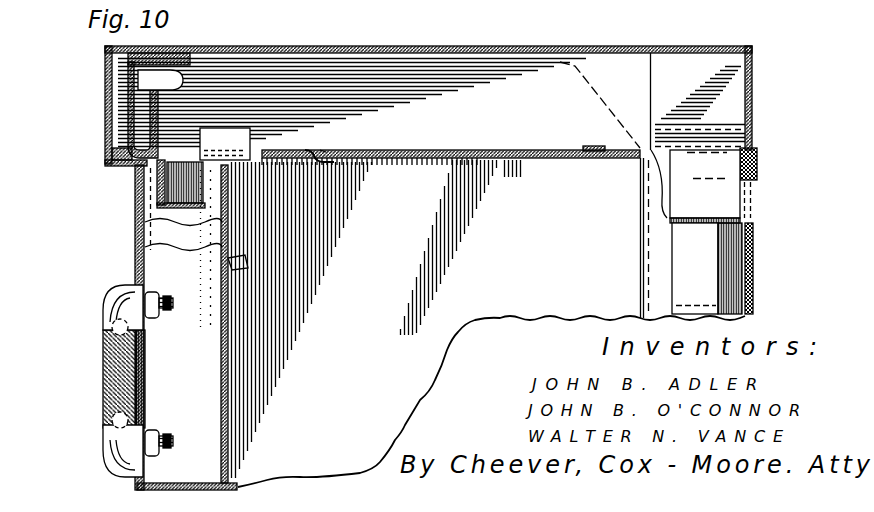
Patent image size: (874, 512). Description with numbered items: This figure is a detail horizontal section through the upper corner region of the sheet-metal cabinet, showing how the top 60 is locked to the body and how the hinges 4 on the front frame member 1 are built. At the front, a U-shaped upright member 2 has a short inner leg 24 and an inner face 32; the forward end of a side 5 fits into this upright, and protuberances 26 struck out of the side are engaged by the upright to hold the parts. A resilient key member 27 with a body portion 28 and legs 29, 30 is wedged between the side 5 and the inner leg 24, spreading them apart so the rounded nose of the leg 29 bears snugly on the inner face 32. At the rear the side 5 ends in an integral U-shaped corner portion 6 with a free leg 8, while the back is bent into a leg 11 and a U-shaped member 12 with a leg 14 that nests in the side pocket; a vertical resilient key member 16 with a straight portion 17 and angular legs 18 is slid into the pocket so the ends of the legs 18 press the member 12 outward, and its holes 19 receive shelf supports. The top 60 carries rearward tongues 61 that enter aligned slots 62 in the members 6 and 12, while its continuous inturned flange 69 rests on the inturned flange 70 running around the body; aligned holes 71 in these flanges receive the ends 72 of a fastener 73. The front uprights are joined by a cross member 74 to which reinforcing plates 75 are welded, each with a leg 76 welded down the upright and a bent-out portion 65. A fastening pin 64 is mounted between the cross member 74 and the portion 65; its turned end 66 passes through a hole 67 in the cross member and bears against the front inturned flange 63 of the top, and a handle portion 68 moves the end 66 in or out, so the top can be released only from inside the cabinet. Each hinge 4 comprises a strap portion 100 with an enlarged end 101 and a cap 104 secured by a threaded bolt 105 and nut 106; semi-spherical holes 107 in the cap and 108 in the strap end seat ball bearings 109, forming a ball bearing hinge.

The front frame member 1 is at (136, 487).
The U-shaped upright member 2 is at (124, 255).
The hinge 4 is at (112, 472).
The side 5 is at (376, 319).
The U-shaped rear corner portion 6 is at (753, 240).
The free leg 8 is at (756, 302).
The leg 11 is at (105, 72).
The U-shaped portion or member 12 is at (752, 312).
The leg 14 is at (642, 214).
The vertical resilient key member 16 is at (726, 252).
The straight portion 17 is at (690, 243).
The leg 18 is at (735, 282).
The hole or aperture 19 is at (228, 438).
The inner leg 24 is at (200, 212).
The protuberance 26 is at (248, 260).
The resilient key member 27 is at (240, 351).
The body portion 28 is at (228, 332).
The leg 29 is at (218, 358).
The leg 30 is at (205, 235).
The inner face 32 is at (134, 207).
The top 60 is at (478, 48).
The rearwardly extending tongue 61 is at (736, 202).
The slot 62 is at (762, 165).
The inturned flange 63 is at (118, 168).
The fastening pin 64 is at (152, 110).
The bent out portion 65 is at (154, 136).
The turned end 66 is at (118, 152).
The hole 67 is at (108, 137).
The handle portion 68 is at (172, 80).
The continuous inturned flange 69 is at (380, 152).
The inturned flange 70 is at (417, 160).
The alined hole 71 is at (322, 152).
The end 72 is at (296, 150).
The fastener 73 is at (660, 168).
The cross member 74 is at (134, 82).
The reinforcing plate 75 is at (152, 62).
The leg 76 is at (134, 232).
The strap portion 100 is at (140, 385).
The thickened or enlarged outer end 101 is at (108, 381).
The cap 104 is at (105, 315).
The lug or bolt 105 is at (160, 306).
The nut 106 is at (160, 318).
The semi-spherical hole 107 is at (112, 292).
The semi-spherical hole 108 is at (108, 348).
The ball bearing 109 is at (115, 420).